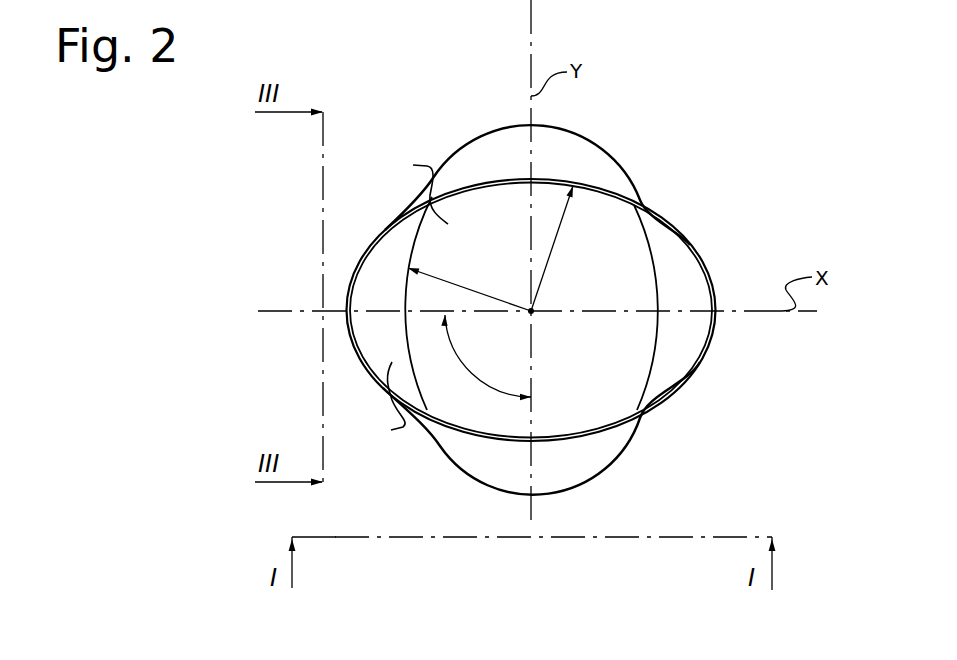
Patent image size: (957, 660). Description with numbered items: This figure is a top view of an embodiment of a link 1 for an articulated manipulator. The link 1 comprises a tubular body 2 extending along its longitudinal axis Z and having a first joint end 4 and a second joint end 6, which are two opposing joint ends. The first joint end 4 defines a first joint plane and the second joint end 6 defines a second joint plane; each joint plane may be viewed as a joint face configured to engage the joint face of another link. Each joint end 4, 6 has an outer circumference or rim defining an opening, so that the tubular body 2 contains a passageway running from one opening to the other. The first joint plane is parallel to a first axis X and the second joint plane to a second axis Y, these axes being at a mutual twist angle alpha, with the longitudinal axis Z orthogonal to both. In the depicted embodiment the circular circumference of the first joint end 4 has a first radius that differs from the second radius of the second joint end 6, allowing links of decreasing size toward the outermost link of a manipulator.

The link 1 is at (764, 140).
The tubular body 2 is at (582, 168).
The first joint end 4 is at (688, 243).
The second joint end 6 is at (578, 457).